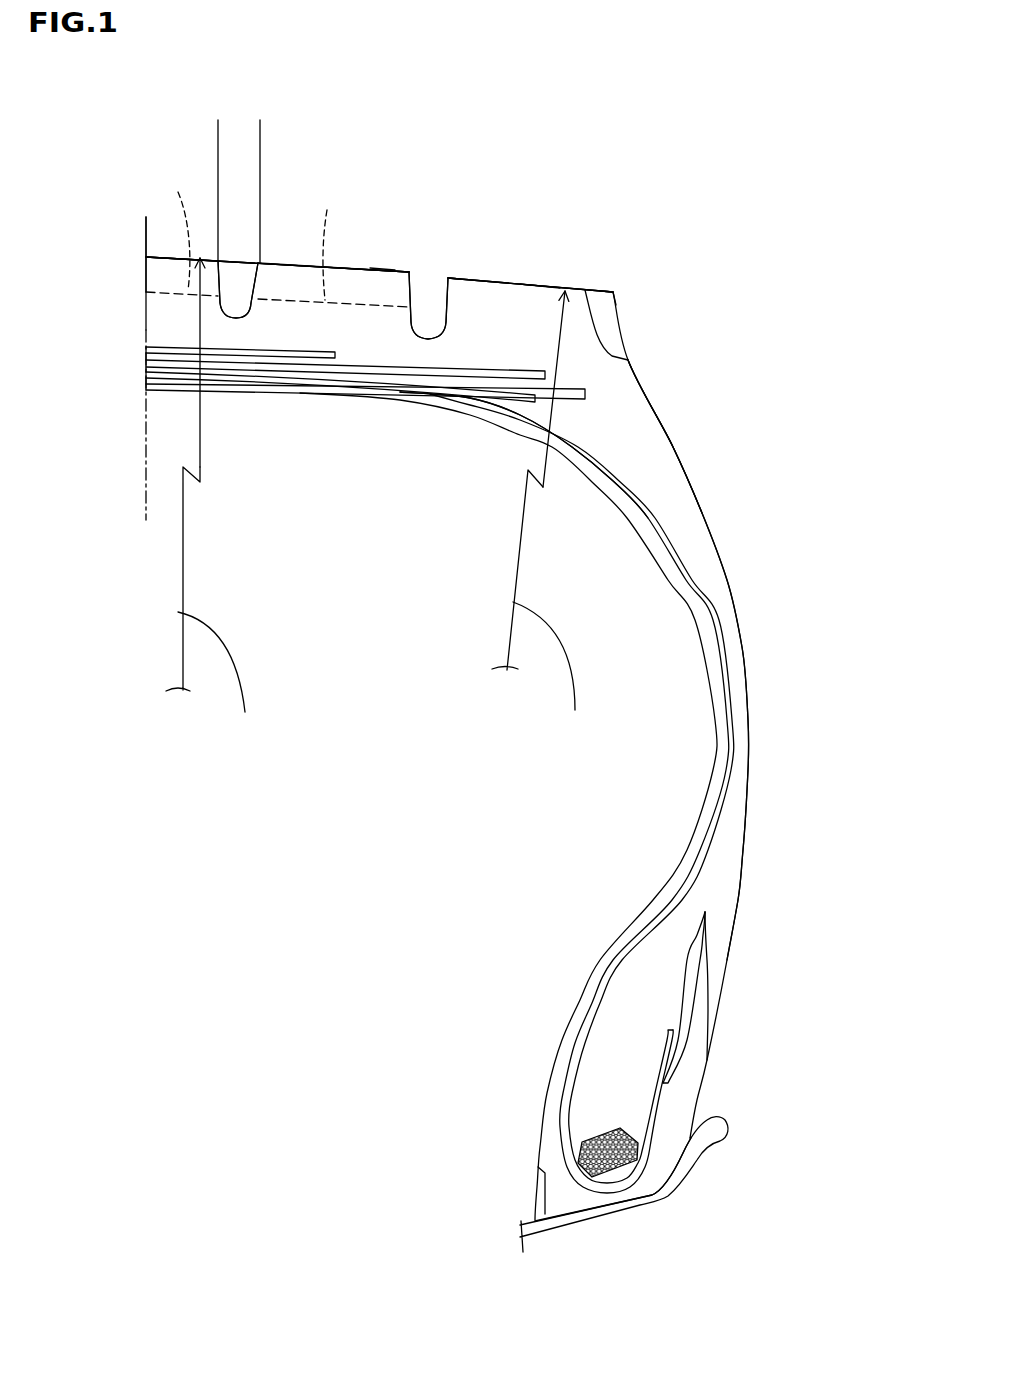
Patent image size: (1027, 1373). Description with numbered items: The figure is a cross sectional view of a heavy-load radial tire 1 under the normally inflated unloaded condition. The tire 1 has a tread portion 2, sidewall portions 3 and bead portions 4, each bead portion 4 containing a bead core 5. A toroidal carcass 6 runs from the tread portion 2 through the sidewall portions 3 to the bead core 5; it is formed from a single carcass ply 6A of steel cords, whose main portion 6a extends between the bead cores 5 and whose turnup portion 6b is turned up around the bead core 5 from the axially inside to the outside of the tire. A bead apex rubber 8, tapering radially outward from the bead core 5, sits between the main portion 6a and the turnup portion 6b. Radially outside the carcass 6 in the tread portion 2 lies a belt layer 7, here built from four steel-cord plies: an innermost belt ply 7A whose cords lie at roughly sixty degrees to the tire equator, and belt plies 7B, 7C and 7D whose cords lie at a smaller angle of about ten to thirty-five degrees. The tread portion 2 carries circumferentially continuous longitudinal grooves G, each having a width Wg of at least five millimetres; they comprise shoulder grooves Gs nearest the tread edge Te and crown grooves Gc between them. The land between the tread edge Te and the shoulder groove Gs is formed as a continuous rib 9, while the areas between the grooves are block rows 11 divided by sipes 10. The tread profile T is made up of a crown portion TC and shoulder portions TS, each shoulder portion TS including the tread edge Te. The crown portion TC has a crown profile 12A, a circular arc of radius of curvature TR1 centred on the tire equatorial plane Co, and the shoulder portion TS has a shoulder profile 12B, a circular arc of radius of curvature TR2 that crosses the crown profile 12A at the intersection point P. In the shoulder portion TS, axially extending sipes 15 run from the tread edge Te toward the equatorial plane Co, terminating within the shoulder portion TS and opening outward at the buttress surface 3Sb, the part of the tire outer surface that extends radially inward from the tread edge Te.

The heavy-load radial tire 1 is at (677, 242).
The tread portion 2 is at (600, 210).
The sidewall portion 3 is at (755, 680).
The buttress surface 3Sb is at (647, 397).
The bead portion 4 is at (540, 1012).
The bead core 5 is at (614, 1160).
The carcass 6 is at (458, 880).
The carcass ply 6A is at (524, 455).
The main portion 6a is at (657, 933).
The turnup portion 6b is at (663, 1052).
The belt layer 7 is at (80, 302).
The innermost belt ply 7A is at (146, 373).
The belt ply 7B is at (146, 366).
The belt ply 7C is at (146, 358).
The belt ply 7D is at (146, 347).
The bead apex rubber 8 is at (620, 1067).
The shoulder land portion 9 is at (542, 267).
The sipe 10 is at (247, 232).
The block row 11 is at (167, 245).
The crown profile 12A is at (277, 264).
The shoulder profile 12B is at (530, 285).
The sipe 15 is at (595, 327).
The tire equatorial plane Co is at (144, 382).
The longitudinal groove G is at (238, 248).
The crown groove Gc is at (238, 289).
The shoulder groove Gs is at (427, 268).
The intersection point P is at (450, 268).
The tread profile T is at (382, 268).
The crown portion TC is at (350, 263).
The shoulder portion TS is at (507, 278).
The tread edge Te is at (617, 282).
The radius of curvature of the crown profile TR1 is at (215, 503).
The radius of curvature of the shoulder profile TR2 is at (545, 519).
The groove width Wg is at (293, 138).